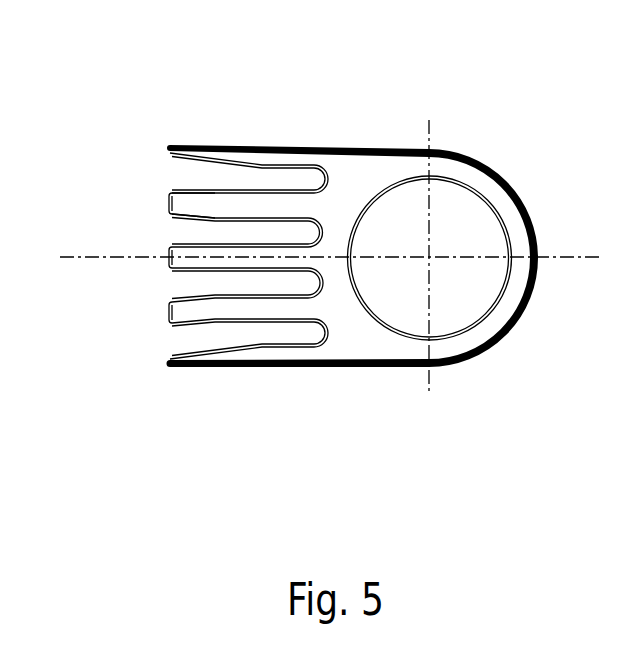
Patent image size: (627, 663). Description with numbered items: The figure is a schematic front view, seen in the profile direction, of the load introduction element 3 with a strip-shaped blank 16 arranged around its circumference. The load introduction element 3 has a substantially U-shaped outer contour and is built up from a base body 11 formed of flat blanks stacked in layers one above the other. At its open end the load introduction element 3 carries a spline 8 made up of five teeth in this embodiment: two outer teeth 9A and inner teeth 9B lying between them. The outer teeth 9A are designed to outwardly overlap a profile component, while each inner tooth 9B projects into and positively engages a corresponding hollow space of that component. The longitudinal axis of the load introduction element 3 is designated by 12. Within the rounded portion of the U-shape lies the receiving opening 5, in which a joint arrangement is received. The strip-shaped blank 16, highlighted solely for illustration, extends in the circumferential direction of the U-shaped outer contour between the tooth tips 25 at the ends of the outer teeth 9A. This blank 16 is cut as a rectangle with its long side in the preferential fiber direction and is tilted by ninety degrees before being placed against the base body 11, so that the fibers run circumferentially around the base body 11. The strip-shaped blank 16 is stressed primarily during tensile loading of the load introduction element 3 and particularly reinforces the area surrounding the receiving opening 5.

The load introduction element 3 is at (529, 108).
The receiving opening 5 is at (460, 210).
The spline 8 is at (138, 275).
The outer teeth 9A is at (248, 157).
The inner tooth 9B is at (167, 247).
The base body 11 is at (344, 342).
The longitudinal axis 12 is at (572, 257).
The strip-shaped blank 16 is at (366, 150).
The tooth tips 25 is at (167, 150).